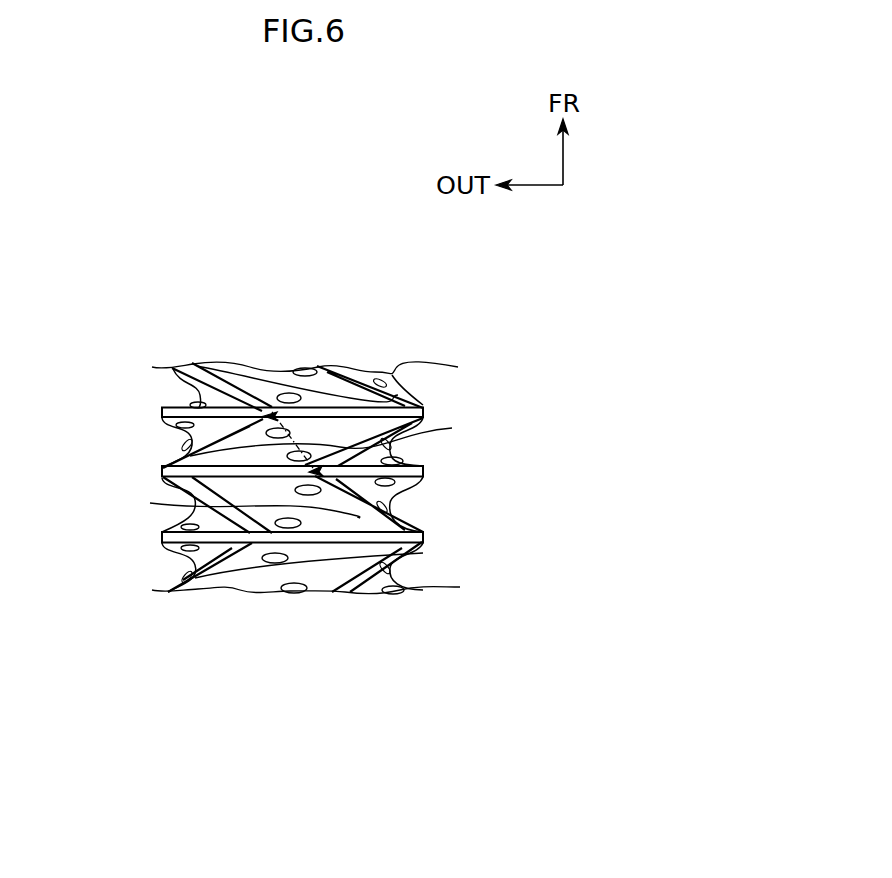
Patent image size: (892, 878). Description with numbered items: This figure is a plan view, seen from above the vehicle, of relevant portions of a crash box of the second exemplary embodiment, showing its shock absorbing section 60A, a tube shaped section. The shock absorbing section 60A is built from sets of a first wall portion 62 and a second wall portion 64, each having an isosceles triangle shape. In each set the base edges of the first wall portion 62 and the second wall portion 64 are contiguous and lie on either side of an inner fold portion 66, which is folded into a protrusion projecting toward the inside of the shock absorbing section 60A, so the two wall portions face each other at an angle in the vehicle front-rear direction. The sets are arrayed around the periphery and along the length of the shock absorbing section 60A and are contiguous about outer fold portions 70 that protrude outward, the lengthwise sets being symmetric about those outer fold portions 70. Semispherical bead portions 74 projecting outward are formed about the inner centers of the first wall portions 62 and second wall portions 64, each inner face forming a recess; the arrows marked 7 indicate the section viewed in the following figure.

The shock absorbing section 60A is at (409, 391).
The first wall portion 62 is at (170, 493).
The second wall portion 64 is at (170, 547).
The inner fold portion 66 is at (173, 440).
The outer fold portion 70 is at (160, 412).
The bead portion 74 is at (313, 470).
The section line of FIG. 7 is at (270, 412).